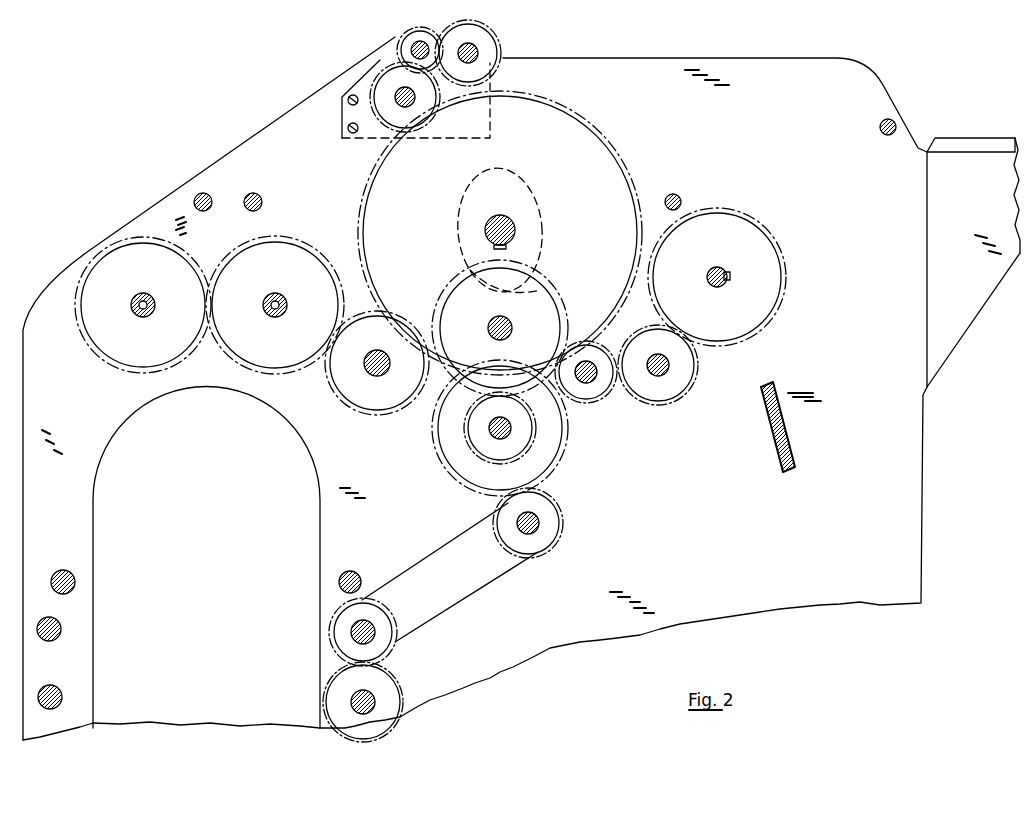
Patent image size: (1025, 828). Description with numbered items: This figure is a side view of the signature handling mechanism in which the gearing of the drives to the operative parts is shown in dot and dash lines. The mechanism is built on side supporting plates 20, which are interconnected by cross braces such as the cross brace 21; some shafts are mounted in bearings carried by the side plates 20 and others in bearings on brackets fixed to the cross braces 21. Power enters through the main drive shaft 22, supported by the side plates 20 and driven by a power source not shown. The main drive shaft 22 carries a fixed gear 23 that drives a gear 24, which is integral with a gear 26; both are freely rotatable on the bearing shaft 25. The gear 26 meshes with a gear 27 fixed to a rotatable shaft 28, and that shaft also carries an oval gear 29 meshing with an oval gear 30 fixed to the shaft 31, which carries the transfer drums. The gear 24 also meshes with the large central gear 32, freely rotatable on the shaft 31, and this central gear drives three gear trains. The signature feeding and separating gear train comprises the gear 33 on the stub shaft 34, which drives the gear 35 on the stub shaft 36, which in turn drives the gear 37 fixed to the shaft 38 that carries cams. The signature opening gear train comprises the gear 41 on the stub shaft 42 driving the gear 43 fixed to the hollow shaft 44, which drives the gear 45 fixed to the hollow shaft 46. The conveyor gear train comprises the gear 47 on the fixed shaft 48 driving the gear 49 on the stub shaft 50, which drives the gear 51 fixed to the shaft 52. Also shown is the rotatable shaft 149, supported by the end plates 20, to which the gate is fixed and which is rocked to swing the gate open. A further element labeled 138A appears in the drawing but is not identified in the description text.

The side supporting plate 20 is at (905, 455).
The cross brace 21 is at (790, 380).
The main drive shaft 22 is at (536, 527).
The gear 23 is at (575, 492).
The gear 24 is at (558, 462).
The bearing shaft 25 is at (496, 440).
The gear 26 is at (528, 432).
The gear 27 is at (443, 380).
The rotatable shaft 28 is at (492, 324).
The oval gear 29 is at (540, 300).
The oval gear 30 is at (510, 165).
The shaft 31 is at (495, 216).
The large central gear 32 is at (597, 130).
The gear 33 is at (592, 342).
The stub shaft 34 is at (592, 380).
The gear 35 is at (703, 370).
The stub shaft 36 is at (656, 354).
The gear 37 is at (777, 240).
The shaft 38 is at (715, 267).
The gear 41 is at (370, 312).
The stub shaft 42 is at (375, 340).
The gear 43 is at (305, 245).
The hollow shaft 44 is at (273, 285).
The gear 45 is at (82, 340).
The hollow shaft 46 is at (143, 283).
The gear 47 is at (372, 135).
The fixed shaft 48 is at (398, 95).
The gear 49 is at (420, 30).
The stub shaft 50 is at (412, 48).
The gear 51 is at (497, 16).
The shaft 52 is at (476, 53).
The rotatable shaft 149 is at (218, 184).
The bolt 138A is at (283, 185).